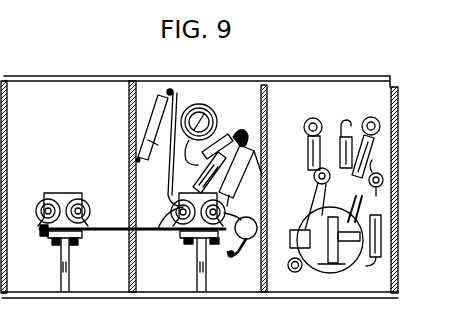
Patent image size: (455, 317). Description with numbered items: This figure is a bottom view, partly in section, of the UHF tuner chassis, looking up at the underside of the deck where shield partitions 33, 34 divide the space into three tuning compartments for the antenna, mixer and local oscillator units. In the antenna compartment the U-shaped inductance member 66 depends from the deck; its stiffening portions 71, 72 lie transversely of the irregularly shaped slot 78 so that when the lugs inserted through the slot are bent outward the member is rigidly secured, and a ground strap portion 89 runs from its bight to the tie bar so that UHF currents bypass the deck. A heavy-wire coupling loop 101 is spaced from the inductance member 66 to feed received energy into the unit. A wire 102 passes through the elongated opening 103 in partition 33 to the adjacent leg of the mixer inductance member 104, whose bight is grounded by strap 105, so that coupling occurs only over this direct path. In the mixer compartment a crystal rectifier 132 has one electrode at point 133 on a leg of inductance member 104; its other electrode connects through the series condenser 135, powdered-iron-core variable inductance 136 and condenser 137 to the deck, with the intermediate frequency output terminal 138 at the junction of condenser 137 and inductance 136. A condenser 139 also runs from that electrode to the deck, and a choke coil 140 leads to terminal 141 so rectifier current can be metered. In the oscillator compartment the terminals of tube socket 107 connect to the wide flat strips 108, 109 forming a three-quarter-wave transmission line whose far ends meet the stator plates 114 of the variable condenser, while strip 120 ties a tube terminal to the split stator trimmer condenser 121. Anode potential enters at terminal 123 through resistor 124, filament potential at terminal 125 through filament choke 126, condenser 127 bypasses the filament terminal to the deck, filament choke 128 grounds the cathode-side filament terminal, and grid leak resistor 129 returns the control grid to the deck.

The partition 33 is at (128, 108).
The partition 34 is at (265, 92).
The inductance member 66 is at (83, 247).
The stiffening portion 71 is at (52, 242).
The stiffening portion 72 is at (78, 242).
The slot 78 is at (40, 229).
The ground strap portion 89 is at (61, 288).
The coupling loop 101 is at (55, 193).
The wire 102 is at (143, 224).
The opening 103 is at (130, 229).
The inductance member 104 is at (188, 241).
The ground strap 105 is at (197, 282).
The tube socket 107 is at (300, 230).
The conductive strip 108 is at (290, 248).
The conductive strip 109 is at (330, 244).
The stator plates 114 is at (310, 186).
The conductive strip 120 is at (314, 195).
The trimmer condenser 121 is at (314, 178).
The terminal 123 is at (310, 118).
The resistor 124 is at (308, 150).
The terminal 125 is at (367, 117).
The filament choke 126 is at (372, 150).
The condenser 127 is at (383, 175).
The filament choke 128 is at (378, 265).
The grid leak resistor 129 is at (358, 110).
The crystal rectifier 132 is at (241, 175).
The point 133 is at (232, 258).
The condenser 135 is at (220, 133).
The variable inductance 136 is at (201, 109).
The condenser 137 is at (166, 140).
The intermediate frequency output terminal 138 is at (162, 224).
The condenser 139 is at (249, 240).
The choke coil 140 is at (212, 177).
The terminal 141 is at (170, 188).